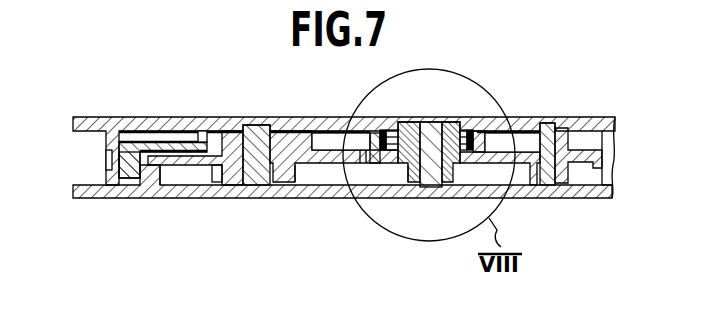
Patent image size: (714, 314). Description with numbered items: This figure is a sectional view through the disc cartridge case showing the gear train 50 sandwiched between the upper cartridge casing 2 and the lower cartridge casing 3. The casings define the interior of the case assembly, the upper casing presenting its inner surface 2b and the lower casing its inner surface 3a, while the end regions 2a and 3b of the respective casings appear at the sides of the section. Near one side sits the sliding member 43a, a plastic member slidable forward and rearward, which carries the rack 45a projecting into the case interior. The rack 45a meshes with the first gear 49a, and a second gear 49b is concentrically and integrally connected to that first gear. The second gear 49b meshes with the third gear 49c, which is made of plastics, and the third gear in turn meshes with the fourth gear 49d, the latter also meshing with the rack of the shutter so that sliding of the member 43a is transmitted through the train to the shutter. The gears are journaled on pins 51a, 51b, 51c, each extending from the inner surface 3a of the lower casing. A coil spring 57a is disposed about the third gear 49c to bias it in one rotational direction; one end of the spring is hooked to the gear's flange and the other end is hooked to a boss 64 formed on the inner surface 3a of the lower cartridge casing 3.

The upper cartridge casing 2 is at (108, 121).
The upper plate right end 2a is at (598, 118).
The inner surface of upper cartridge casing 2b is at (328, 137).
The lower cartridge casing 3 is at (100, 190).
The inner surface of lower cartridge casing 3a is at (600, 188).
The lower plate recess 3b is at (313, 178).
The sliding member 43a is at (125, 158).
The rack 45a is at (198, 142).
The first gear 49a is at (207, 131).
The second gear 49b is at (361, 163).
The third gear 49c is at (388, 168).
The fourth gear 49d is at (597, 160).
The gear train 50 is at (368, 112).
The pin 51a is at (257, 138).
The pin 51b is at (432, 124).
The pin 51c is at (546, 132).
The coil spring 57a is at (467, 130).
The boss 64 is at (512, 135).